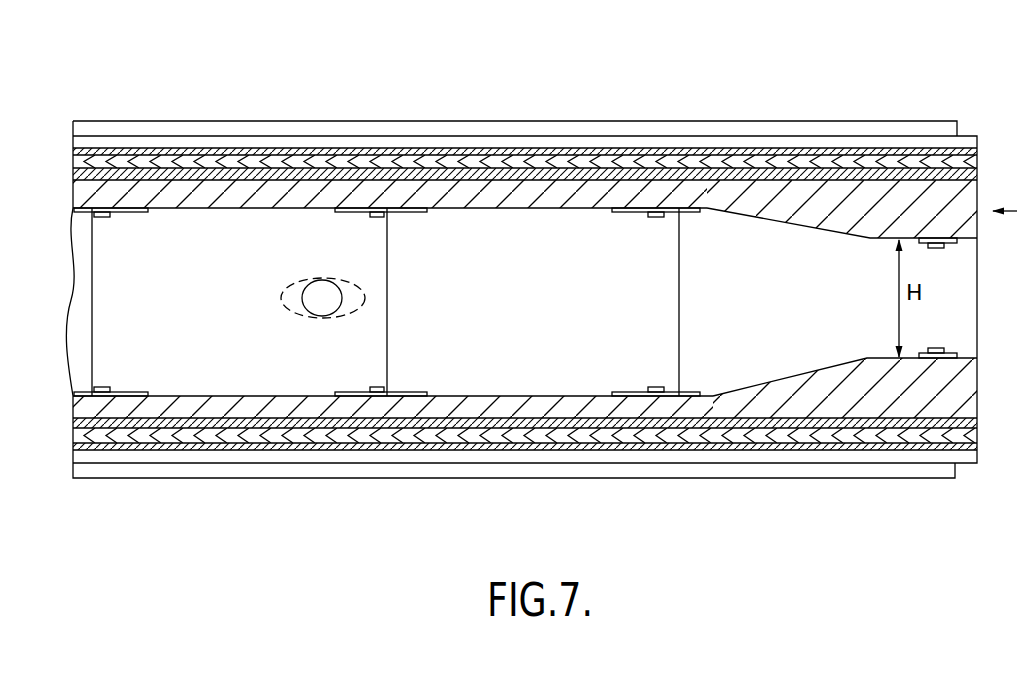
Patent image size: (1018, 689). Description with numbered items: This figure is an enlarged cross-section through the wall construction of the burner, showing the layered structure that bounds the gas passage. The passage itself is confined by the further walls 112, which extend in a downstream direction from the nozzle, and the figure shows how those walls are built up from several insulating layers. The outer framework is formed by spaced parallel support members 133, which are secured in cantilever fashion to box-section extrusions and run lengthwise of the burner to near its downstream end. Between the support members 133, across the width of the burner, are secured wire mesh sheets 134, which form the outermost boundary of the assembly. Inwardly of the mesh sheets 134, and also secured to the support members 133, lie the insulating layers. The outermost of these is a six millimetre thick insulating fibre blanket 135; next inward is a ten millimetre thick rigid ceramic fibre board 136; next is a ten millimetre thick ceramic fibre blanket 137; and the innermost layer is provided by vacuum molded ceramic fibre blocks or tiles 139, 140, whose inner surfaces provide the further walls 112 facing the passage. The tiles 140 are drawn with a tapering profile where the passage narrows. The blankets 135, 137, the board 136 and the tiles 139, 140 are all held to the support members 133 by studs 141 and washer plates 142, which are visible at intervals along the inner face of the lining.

The further walls 112 is at (185, 214).
The support members 133 is at (470, 130).
The wire mesh sheets 134 is at (549, 119).
The insulating fibre blanket 135 is at (734, 152).
The rigid ceramic fibre board 136 is at (808, 161).
The ceramic fibre blanket 137 is at (871, 172).
The ceramic fibre tiles 139 is at (271, 196).
The ceramic fibre tiles 140 is at (815, 210).
The studs 141 is at (657, 386).
The washer plates 142 is at (696, 389).